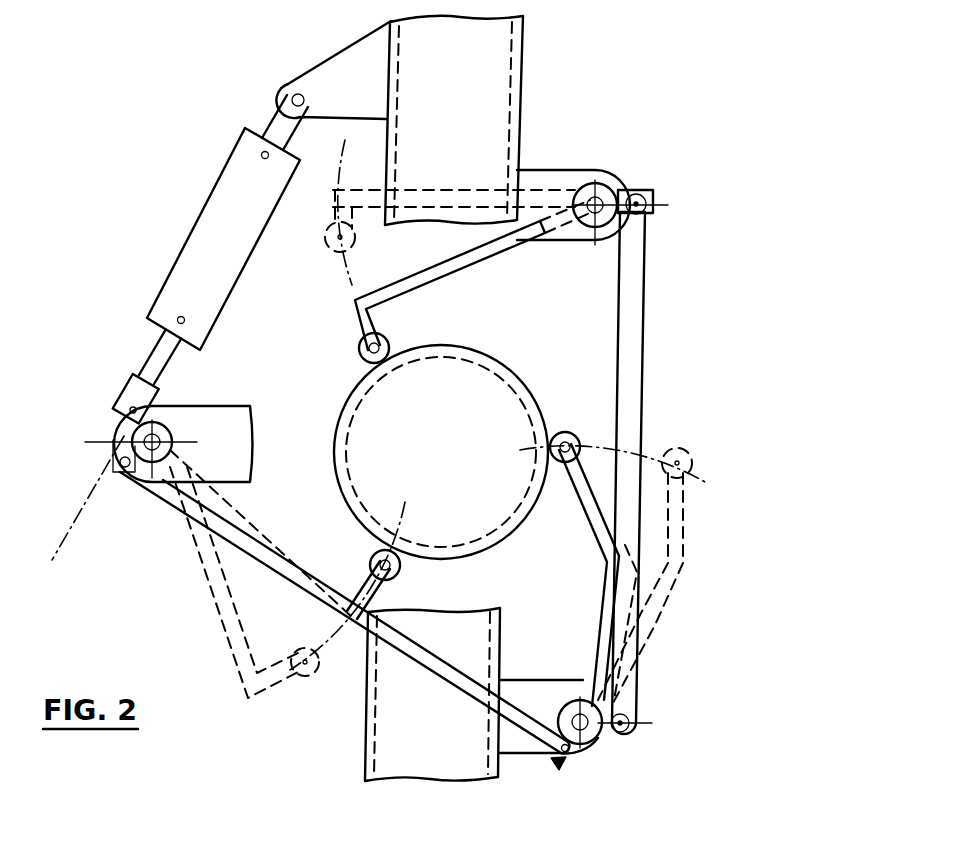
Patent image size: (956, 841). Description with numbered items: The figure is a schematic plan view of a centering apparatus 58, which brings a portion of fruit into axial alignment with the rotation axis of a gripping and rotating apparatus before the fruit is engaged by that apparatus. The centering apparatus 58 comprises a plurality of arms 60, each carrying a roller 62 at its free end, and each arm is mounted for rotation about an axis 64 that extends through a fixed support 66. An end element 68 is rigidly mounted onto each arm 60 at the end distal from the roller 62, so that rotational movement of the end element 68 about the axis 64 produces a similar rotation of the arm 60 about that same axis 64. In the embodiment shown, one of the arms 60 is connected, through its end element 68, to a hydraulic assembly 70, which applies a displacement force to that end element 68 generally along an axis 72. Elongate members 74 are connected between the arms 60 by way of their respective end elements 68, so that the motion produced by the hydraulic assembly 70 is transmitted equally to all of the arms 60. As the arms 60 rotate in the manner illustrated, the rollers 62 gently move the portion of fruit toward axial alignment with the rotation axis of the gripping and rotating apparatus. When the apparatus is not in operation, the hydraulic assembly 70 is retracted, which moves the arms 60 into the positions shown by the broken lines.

The centering apparatus 58 is at (733, 134).
The arms 60 is at (497, 245).
The rollers 62 is at (359, 350).
The axis 64 is at (606, 194).
The fixed support 66 is at (566, 180).
The end element 68 is at (655, 196).
The hydraulic assembly 70 is at (200, 246).
The axis 72 is at (80, 510).
The elongate members 74 is at (633, 375).